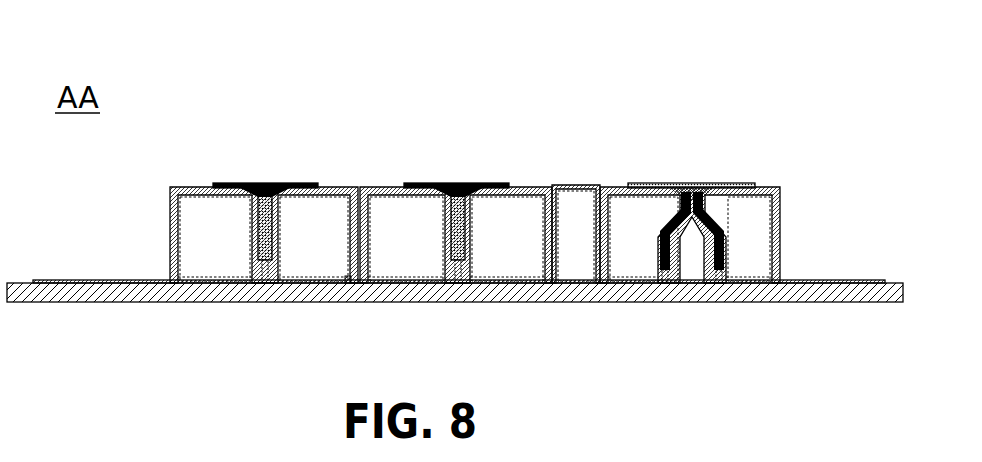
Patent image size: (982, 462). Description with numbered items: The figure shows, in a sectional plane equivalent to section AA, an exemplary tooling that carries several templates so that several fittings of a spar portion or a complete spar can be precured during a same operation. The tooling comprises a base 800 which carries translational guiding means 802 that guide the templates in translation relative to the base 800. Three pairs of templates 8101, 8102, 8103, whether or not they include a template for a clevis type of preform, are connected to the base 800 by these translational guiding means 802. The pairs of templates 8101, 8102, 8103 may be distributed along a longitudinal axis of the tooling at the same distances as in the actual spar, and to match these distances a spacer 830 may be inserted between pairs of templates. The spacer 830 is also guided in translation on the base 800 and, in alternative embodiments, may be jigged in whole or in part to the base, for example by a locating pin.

The base 800 is at (127, 302).
The translational guiding means 802 is at (105, 279).
The first pair of templates 8101 is at (356, 181).
The second pair of templates 8102 is at (548, 181).
The third pair of templates 8103 is at (778, 178).
The spacer 830 is at (577, 184).